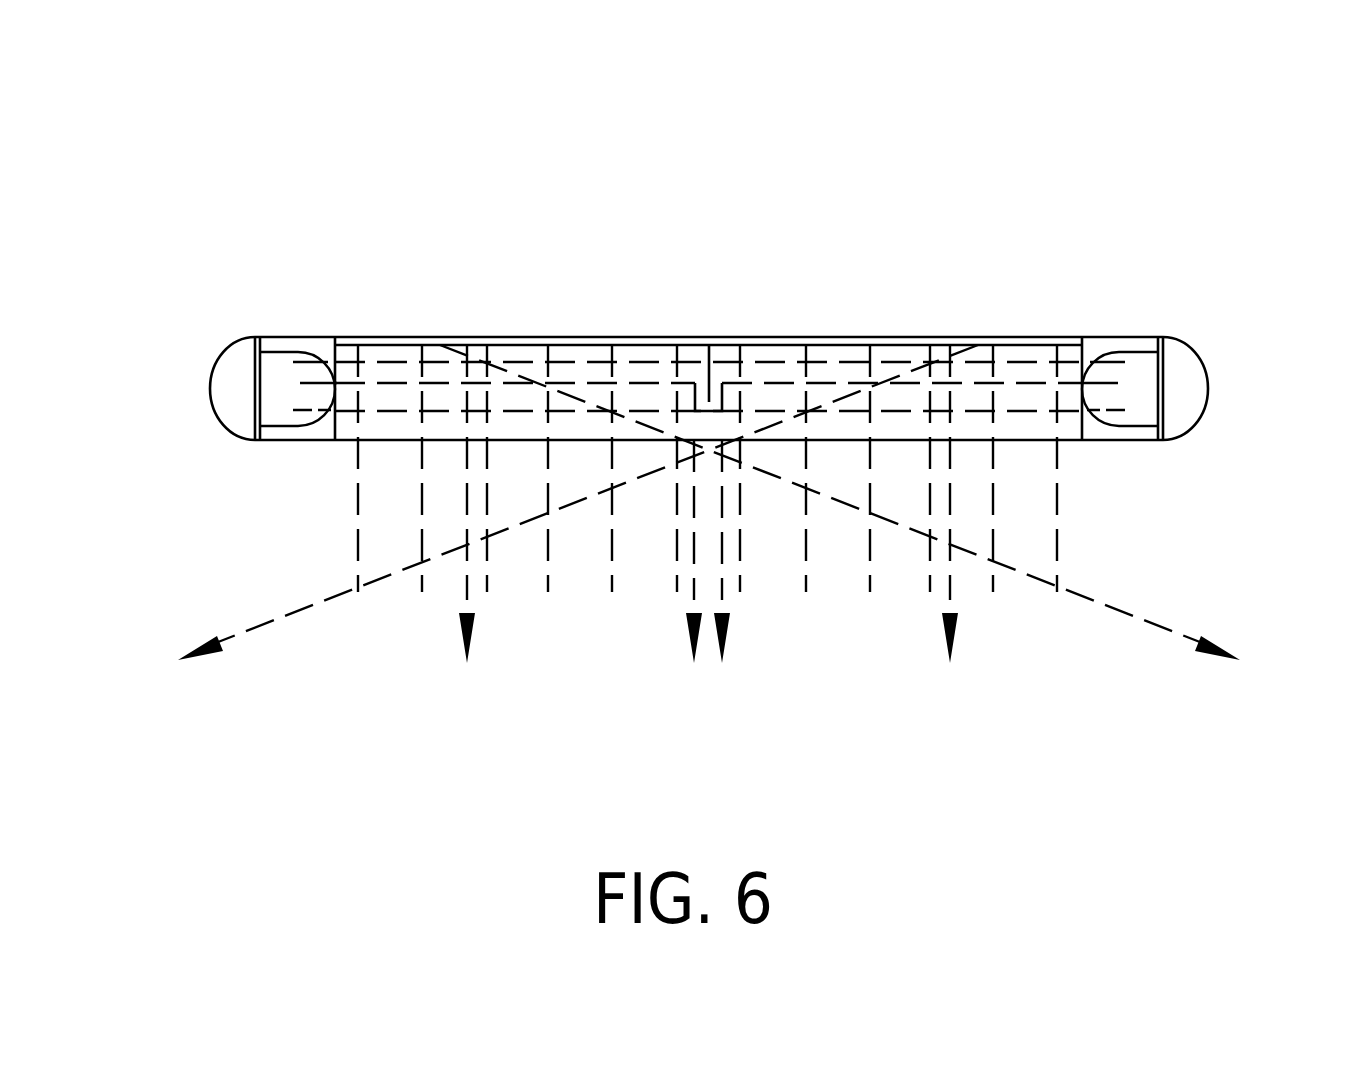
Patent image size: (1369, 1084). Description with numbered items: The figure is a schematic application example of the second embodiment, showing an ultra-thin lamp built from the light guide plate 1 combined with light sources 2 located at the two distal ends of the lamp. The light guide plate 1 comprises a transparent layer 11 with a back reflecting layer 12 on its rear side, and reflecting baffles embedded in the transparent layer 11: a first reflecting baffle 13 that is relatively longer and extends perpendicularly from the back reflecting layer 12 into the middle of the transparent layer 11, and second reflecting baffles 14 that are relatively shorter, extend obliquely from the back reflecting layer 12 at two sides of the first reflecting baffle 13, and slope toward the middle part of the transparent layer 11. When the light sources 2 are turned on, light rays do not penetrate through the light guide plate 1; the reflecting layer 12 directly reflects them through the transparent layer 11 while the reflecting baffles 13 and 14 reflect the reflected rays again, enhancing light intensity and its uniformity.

The light guide plate 1 is at (1083, 443).
The light source 2 is at (278, 392).
The transparent layer 11 is at (847, 360).
The back reflecting layer 12 is at (573, 337).
The first reflecting baffle 13 is at (706, 365).
The second reflecting baffle 14 is at (475, 337).